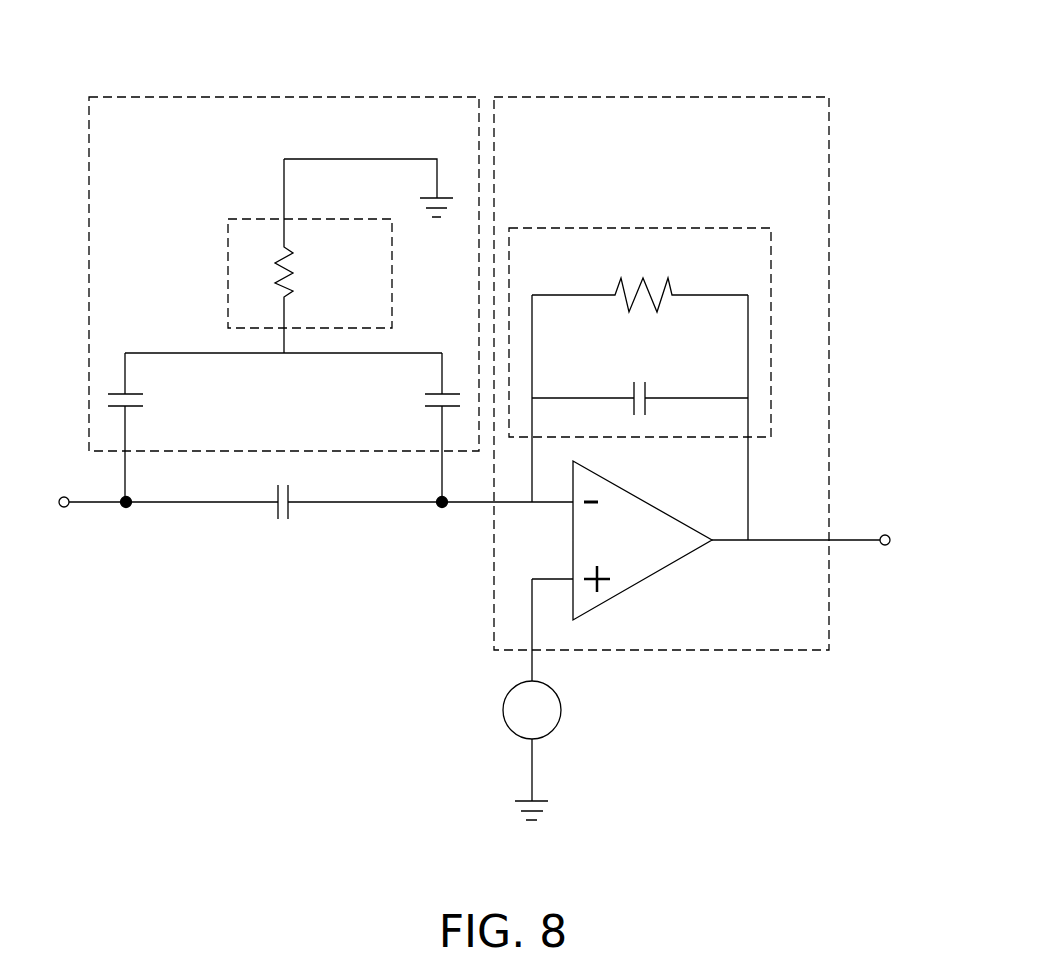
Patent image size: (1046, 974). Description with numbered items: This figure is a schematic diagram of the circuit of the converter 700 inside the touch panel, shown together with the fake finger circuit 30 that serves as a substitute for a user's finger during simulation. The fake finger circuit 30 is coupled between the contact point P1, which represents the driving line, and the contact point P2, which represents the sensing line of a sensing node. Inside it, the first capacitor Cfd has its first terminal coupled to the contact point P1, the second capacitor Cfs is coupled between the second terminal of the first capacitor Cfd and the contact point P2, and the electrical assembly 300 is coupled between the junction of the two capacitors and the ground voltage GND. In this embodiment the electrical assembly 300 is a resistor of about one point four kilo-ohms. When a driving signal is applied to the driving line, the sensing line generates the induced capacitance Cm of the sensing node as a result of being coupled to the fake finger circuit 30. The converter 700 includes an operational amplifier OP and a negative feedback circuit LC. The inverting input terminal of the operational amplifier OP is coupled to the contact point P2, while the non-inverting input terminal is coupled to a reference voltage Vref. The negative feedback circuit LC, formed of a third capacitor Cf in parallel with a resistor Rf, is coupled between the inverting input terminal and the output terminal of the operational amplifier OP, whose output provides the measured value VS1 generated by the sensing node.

The fake finger circuit 30 is at (283, 96).
The converter 700 is at (662, 96).
The electrical assembly 300 is at (228, 273).
The ground voltage GND is at (484, 526).
The first capacitor Cfd is at (151, 427).
The second capacitor Cfs is at (420, 427).
The induced capacitance Cm is at (285, 486).
The contact point P1 is at (126, 508).
The contact point P2 is at (442, 508).
The negative feedback circuit LC is at (645, 228).
The resistor Rf is at (640, 277).
The third capacitor Cf is at (640, 381).
The operational amplifier OP is at (672, 562).
The reference voltage Vref is at (532, 690).
The measured value VS1 is at (829, 540).